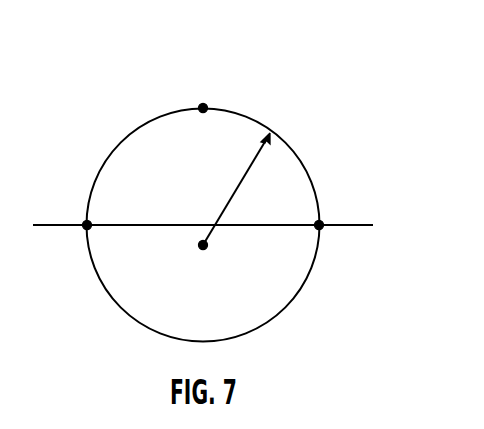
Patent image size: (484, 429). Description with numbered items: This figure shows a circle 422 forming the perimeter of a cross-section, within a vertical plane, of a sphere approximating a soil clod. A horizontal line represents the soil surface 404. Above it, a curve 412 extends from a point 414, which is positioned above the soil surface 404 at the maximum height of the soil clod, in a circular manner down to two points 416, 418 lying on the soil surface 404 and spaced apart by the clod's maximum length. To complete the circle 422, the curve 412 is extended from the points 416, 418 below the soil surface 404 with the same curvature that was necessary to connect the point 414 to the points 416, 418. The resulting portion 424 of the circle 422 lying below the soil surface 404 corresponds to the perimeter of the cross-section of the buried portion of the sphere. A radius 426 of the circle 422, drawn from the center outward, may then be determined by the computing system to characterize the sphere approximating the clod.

The soil surface 404 is at (353, 228).
The curve 412 is at (141, 125).
The point 414 is at (203, 107).
The point 416 is at (86, 231).
The point 418 is at (322, 222).
The circle 422 is at (318, 97).
The portion of the circle 424 is at (122, 310).
The radius 426 is at (240, 178).